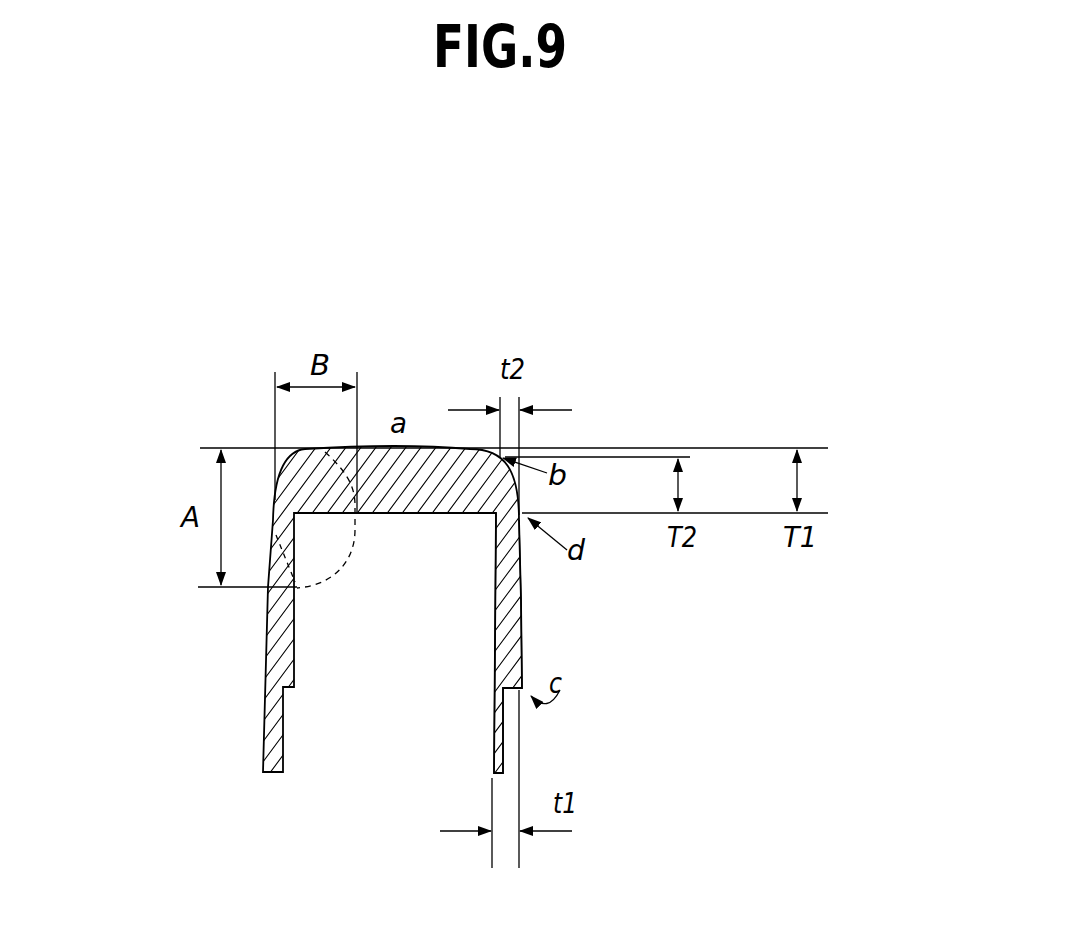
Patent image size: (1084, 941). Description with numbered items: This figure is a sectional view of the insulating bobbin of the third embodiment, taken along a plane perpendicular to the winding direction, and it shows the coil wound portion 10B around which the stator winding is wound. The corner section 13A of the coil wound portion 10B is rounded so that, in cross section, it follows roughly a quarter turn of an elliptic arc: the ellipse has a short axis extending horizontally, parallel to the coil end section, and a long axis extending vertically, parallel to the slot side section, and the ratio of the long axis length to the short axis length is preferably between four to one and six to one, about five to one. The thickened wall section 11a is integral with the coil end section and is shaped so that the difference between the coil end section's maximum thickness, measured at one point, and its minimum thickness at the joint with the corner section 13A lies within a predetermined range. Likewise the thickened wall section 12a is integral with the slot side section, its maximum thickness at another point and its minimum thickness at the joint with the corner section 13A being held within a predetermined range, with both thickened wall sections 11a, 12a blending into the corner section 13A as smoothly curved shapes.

The coil wound portion 10B is at (480, 519).
The thickened wall section 11a is at (383, 423).
The thickened wall section 12a is at (607, 692).
The corner section 13A is at (260, 440).